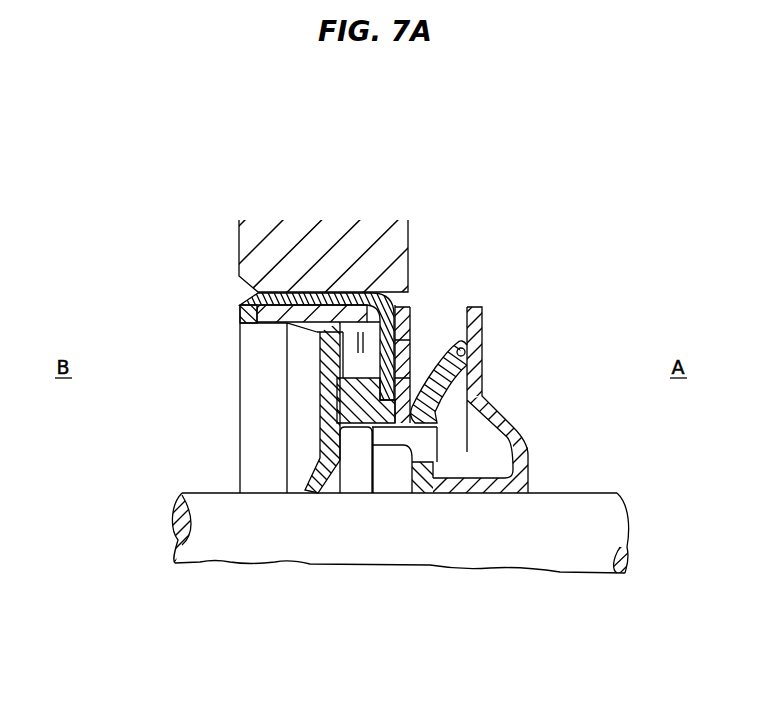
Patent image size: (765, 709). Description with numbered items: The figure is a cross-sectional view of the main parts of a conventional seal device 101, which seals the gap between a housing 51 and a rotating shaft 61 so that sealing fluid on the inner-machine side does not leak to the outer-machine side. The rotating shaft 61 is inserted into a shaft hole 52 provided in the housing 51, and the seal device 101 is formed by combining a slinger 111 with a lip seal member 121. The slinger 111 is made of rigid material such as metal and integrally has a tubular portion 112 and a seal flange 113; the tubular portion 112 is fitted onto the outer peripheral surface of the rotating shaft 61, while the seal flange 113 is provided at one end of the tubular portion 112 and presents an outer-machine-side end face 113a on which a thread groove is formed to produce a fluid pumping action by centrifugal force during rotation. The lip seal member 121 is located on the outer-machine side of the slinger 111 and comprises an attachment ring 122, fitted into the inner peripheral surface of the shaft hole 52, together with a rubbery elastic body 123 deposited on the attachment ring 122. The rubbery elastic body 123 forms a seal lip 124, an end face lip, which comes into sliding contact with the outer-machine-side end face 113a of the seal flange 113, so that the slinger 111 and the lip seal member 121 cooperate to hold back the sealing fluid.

The housing 51 is at (403, 240).
The shaft hole 52 is at (403, 297).
The rotating shaft 61 is at (563, 560).
The seal device 101 is at (231, 302).
The slinger 111 is at (506, 370).
The tubular portion 112 is at (468, 487).
The seal flange 113 is at (475, 330).
The outer-machine-side end face 113a is at (467, 350).
The lip seal member 121 is at (312, 442).
The attachment ring 122 is at (317, 313).
The rubbery elastic body 123 is at (357, 400).
The seal lip 124 is at (472, 378).